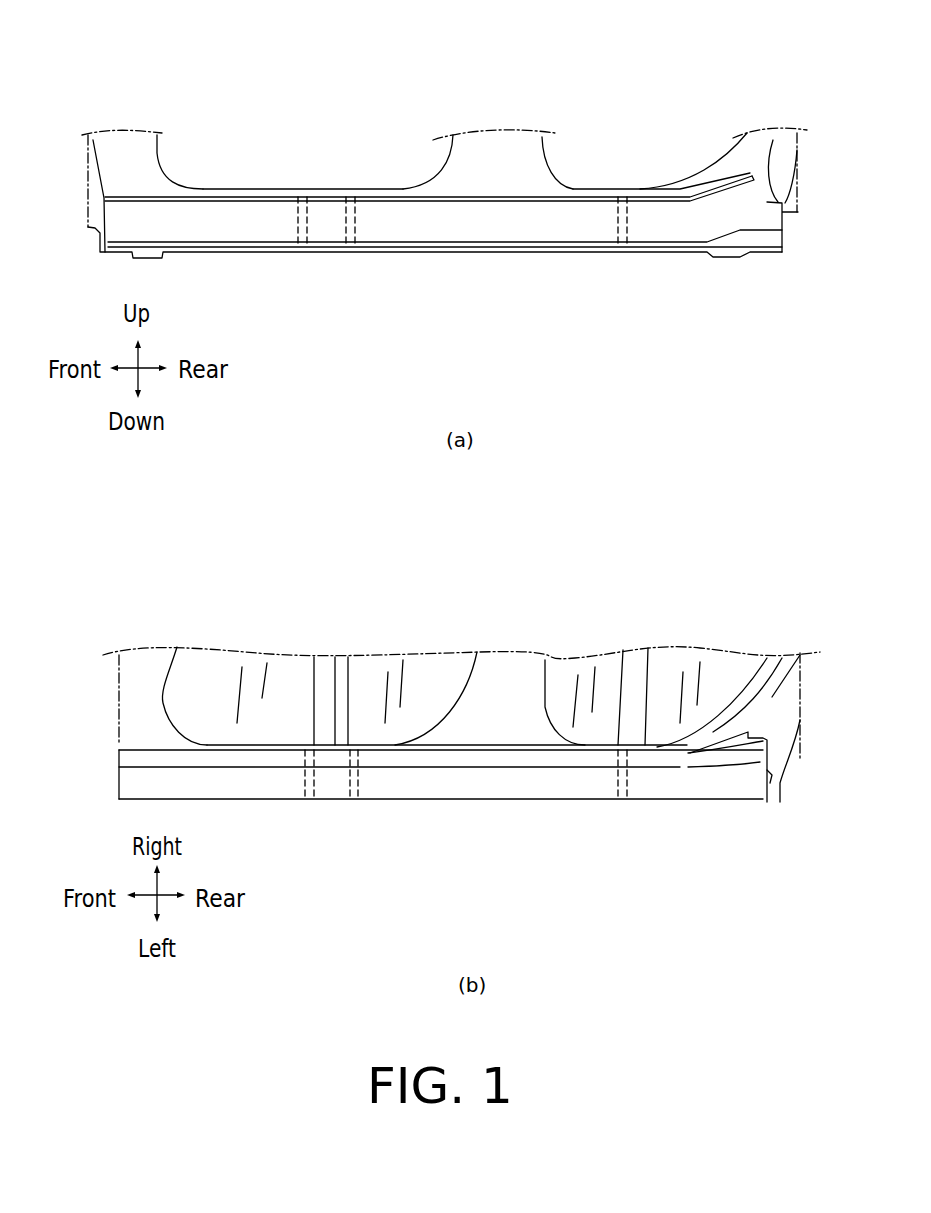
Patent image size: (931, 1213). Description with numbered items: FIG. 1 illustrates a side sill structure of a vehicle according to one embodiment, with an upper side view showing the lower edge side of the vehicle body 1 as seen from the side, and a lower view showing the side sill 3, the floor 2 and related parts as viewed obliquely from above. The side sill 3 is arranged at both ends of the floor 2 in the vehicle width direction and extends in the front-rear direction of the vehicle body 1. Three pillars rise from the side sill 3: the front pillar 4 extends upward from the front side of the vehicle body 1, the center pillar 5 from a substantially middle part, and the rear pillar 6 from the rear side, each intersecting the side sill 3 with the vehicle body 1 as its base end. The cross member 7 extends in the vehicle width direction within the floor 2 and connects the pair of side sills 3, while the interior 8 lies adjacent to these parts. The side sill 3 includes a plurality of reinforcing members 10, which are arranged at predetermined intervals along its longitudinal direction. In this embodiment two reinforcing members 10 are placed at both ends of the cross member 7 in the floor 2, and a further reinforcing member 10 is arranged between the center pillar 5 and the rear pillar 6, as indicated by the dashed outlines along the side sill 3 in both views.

The vehicle body 1 is at (304, 82).
The floor 2 is at (253, 662).
The side sill 3 is at (286, 185).
The front pillar 4 is at (143, 143).
The center pillar 5 is at (493, 150).
The rear pillar 6 is at (738, 155).
The cross member 7 is at (320, 682).
The interior 8 is at (421, 658).
The reinforcing member 10 is at (349, 253).